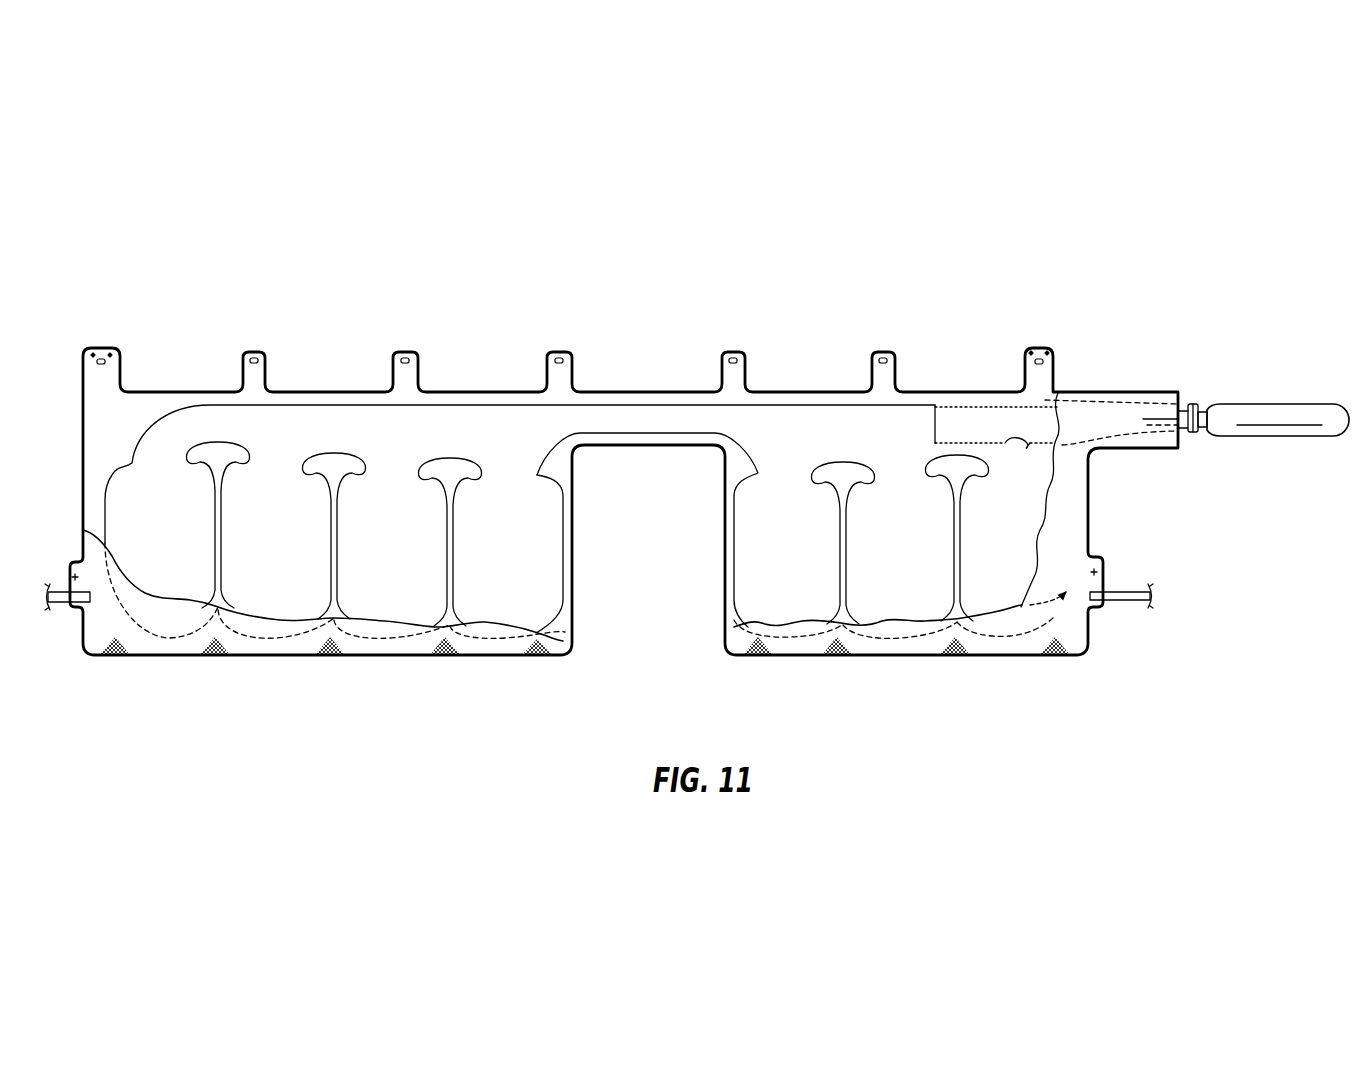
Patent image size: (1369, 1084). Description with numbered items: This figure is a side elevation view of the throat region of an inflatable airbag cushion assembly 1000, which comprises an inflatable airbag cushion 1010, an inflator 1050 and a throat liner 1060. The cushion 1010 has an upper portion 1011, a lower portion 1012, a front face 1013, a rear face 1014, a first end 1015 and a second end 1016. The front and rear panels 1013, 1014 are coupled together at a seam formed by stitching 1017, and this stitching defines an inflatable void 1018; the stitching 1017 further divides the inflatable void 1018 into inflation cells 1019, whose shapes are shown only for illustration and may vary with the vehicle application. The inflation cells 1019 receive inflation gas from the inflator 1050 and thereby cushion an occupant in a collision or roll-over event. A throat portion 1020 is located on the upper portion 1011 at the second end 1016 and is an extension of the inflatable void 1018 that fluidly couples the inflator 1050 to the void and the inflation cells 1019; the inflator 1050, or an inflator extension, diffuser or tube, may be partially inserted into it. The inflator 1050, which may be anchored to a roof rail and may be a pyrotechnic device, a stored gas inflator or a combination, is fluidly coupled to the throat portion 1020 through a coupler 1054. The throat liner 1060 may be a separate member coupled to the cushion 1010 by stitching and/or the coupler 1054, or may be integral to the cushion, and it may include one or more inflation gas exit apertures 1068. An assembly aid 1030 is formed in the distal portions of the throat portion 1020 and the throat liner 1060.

The inflatable airbag cushion assembly 1000 is at (803, 262).
The inflatable airbag cushion 1010 is at (820, 423).
The upper portion 1011 is at (104, 408).
The lower portion 1012 is at (93, 657).
The front face 1013 is at (1056, 585).
The rear face 1014 is at (906, 603).
The first end 1015 is at (92, 439).
The second end 1016 is at (1088, 557).
The stitching 1017 is at (275, 640).
The inflatable void 1018 is at (908, 430).
The inflation cells 1019 is at (395, 493).
The throat portion 1020 is at (1113, 403).
The assembly aid 1030 is at (1160, 452).
The inflator 1050 is at (1265, 410).
The coupler 1054 is at (1193, 406).
The throat liner 1060 is at (980, 420).
The inflation gas exit apertures 1068 is at (918, 428).